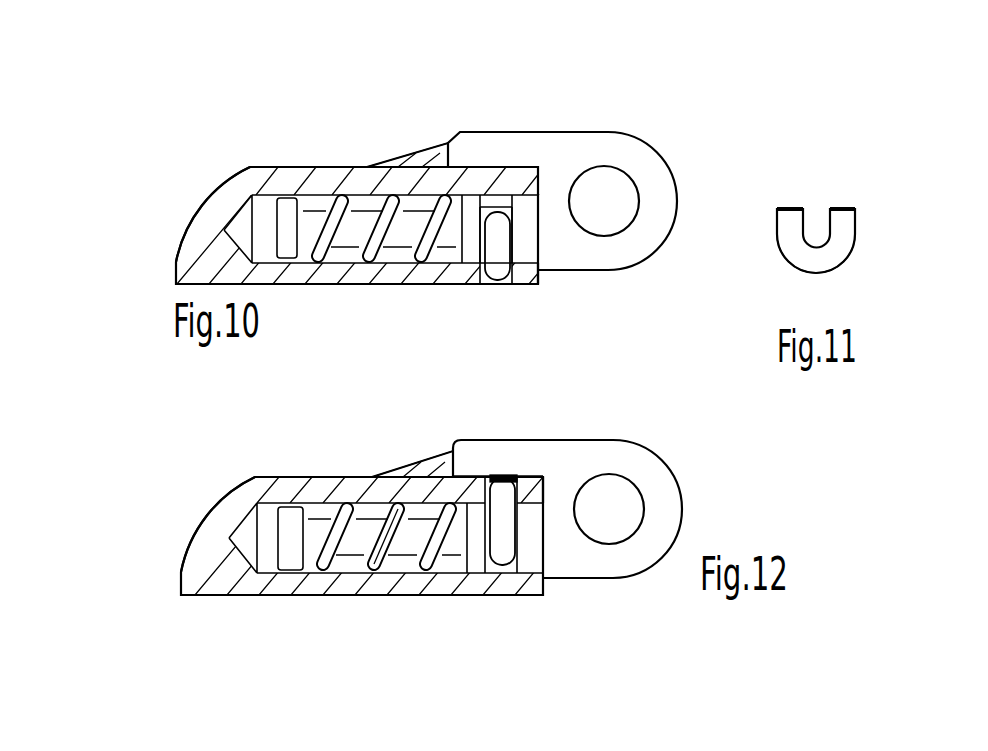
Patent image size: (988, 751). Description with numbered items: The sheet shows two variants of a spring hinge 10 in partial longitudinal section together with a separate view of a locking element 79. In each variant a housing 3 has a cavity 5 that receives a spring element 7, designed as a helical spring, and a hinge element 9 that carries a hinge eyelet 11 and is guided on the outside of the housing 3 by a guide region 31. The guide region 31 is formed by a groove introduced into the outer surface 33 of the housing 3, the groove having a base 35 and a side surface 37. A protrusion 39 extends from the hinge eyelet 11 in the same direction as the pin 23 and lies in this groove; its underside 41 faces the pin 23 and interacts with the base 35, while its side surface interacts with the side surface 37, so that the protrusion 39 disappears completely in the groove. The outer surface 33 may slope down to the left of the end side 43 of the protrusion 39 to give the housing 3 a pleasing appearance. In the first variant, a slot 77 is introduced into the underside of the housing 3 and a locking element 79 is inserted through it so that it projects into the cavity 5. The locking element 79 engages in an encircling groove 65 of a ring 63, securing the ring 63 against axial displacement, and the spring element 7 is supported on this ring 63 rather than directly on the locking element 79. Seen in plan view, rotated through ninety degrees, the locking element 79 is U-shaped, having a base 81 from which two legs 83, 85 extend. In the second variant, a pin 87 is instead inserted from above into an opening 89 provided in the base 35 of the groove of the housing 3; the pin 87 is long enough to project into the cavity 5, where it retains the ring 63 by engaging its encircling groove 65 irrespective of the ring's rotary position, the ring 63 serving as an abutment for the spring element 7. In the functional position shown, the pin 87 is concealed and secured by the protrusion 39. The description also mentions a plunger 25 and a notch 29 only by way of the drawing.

In FIG. 10, the housing 3 is at (203, 185).
In FIG. 12, the housing 3 is at (375, 511).
In FIG. 10, the cavity 5 is at (260, 217).
In FIG. 12, the cavity 5 is at (354, 596).
In FIG. 10, the spring element 7 is at (340, 190).
In FIG. 12, the spring element 7 is at (356, 467).
In FIG. 10, the hinge element 9 is at (652, 139).
In FIG. 12, the hinge element 9 is at (569, 456).
In FIG. 10, the spring hinge 10 is at (292, 163).
In FIG. 12, the spring hinge 10 is at (313, 415).
In FIG. 10, the hinge eyelet 11 is at (657, 190).
In FIG. 12, the hinge eyelet 11 is at (667, 492).
In FIG. 12, the pin 23 is at (374, 618).
In FIG. 12, the plunger 25 is at (279, 615).
In FIG. 10, the notch 29 is at (545, 279).
In FIG. 12, the notch 29 is at (601, 589).
In FIG. 10, the guide region 31 is at (428, 145).
In FIG. 12, the guide region 31 is at (412, 433).
In FIG. 10, the outer surface 33 is at (185, 222).
In FIG. 12, the outer surface 33 is at (212, 472).
In FIG. 10, the base 35 is at (407, 160).
In FIG. 12, the base 35 is at (356, 414).
In FIG. 10, the side surface 37 is at (418, 153).
In FIG. 12, the side surface 37 is at (412, 399).
In FIG. 10, the protrusion 39 is at (497, 143).
In FIG. 12, the protrusion 39 is at (520, 400).
In FIG. 10, the underside 41 is at (503, 157).
In FIG. 12, the underside 41 is at (533, 420).
In FIG. 10, the end side 43 is at (443, 153).
In FIG. 12, the end side 43 is at (464, 424).
In FIG. 10, the ring 63 is at (527, 210).
In FIG. 12, the ring 63 is at (551, 599).
In FIG. 10, the encircling groove 65 is at (498, 198).
In FIG. 12, the encircling groove 65 is at (485, 607).
In FIG. 10, the slot 77 is at (510, 281).
In FIG. 10, the locking element 79 is at (498, 258).
In FIG. 11, the locking element 79 is at (862, 211).
In FIG. 11, the base 81 is at (820, 258).
In FIG. 11, the leg 83 is at (793, 232).
In FIG. 11, the leg 85 is at (843, 235).
In FIG. 12, the pin 87 is at (507, 467).
In FIG. 12, the opening 89 is at (605, 427).